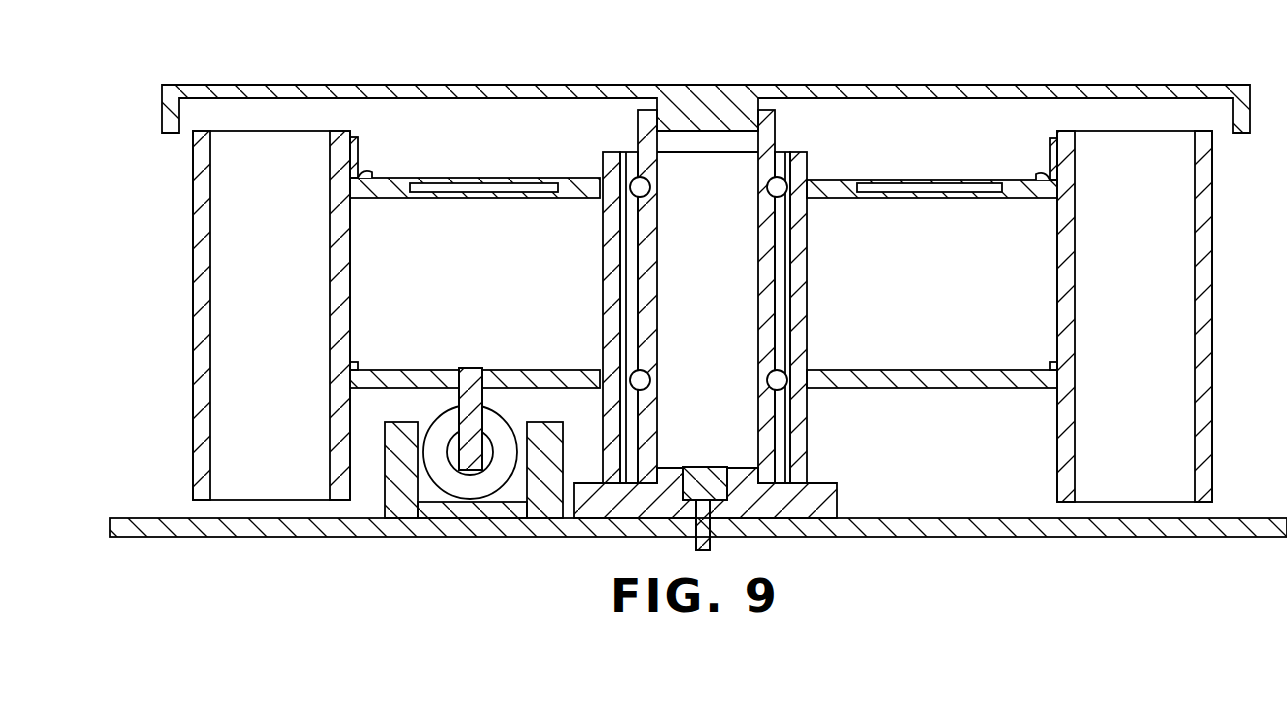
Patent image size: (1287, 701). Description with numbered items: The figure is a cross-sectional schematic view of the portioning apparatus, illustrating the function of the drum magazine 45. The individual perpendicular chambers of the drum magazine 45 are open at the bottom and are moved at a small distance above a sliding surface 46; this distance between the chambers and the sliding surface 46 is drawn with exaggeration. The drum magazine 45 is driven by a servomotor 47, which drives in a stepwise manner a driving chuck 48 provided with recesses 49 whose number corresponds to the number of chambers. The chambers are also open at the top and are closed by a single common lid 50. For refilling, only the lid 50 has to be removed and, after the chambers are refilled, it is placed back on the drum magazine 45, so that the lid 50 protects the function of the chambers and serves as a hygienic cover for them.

The drum magazine 45 is at (1012, 163).
The sliding surface 46 is at (142, 517).
The servomotor 47 is at (453, 480).
The driving chuck 48 is at (391, 378).
The recess 49 is at (487, 378).
The lid 50 is at (468, 88).